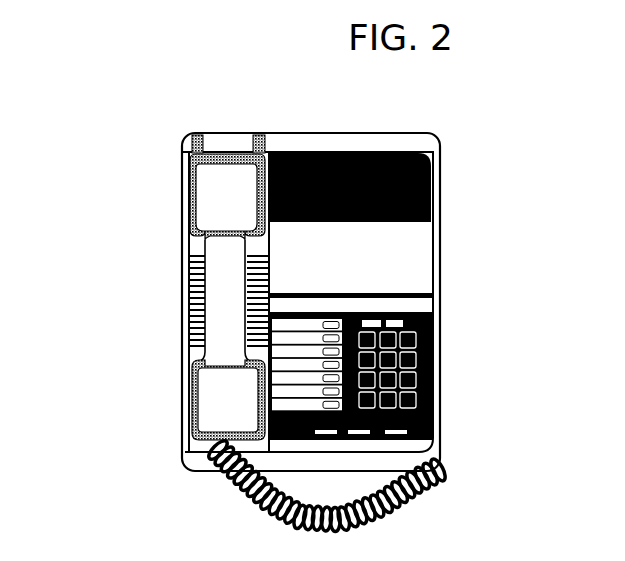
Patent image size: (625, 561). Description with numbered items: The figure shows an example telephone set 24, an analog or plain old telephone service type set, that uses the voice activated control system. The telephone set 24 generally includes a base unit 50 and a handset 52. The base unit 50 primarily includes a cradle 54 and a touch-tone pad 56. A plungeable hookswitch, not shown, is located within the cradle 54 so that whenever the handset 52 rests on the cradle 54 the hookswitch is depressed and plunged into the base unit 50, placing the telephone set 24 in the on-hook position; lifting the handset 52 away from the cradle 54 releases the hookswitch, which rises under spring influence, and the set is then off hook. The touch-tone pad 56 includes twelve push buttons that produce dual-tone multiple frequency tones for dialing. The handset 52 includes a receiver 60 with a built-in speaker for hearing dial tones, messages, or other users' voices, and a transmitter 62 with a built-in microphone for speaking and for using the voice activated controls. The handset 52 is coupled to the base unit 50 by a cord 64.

The telephone set 24 is at (168, 111).
The base unit 50 is at (413, 143).
The handset 52 is at (225, 288).
The cradle 54 is at (195, 230).
The touch-tone pad 56 is at (433, 345).
The receiver 60 is at (220, 188).
The transmitter 62 is at (225, 398).
The cord 64 is at (440, 468).